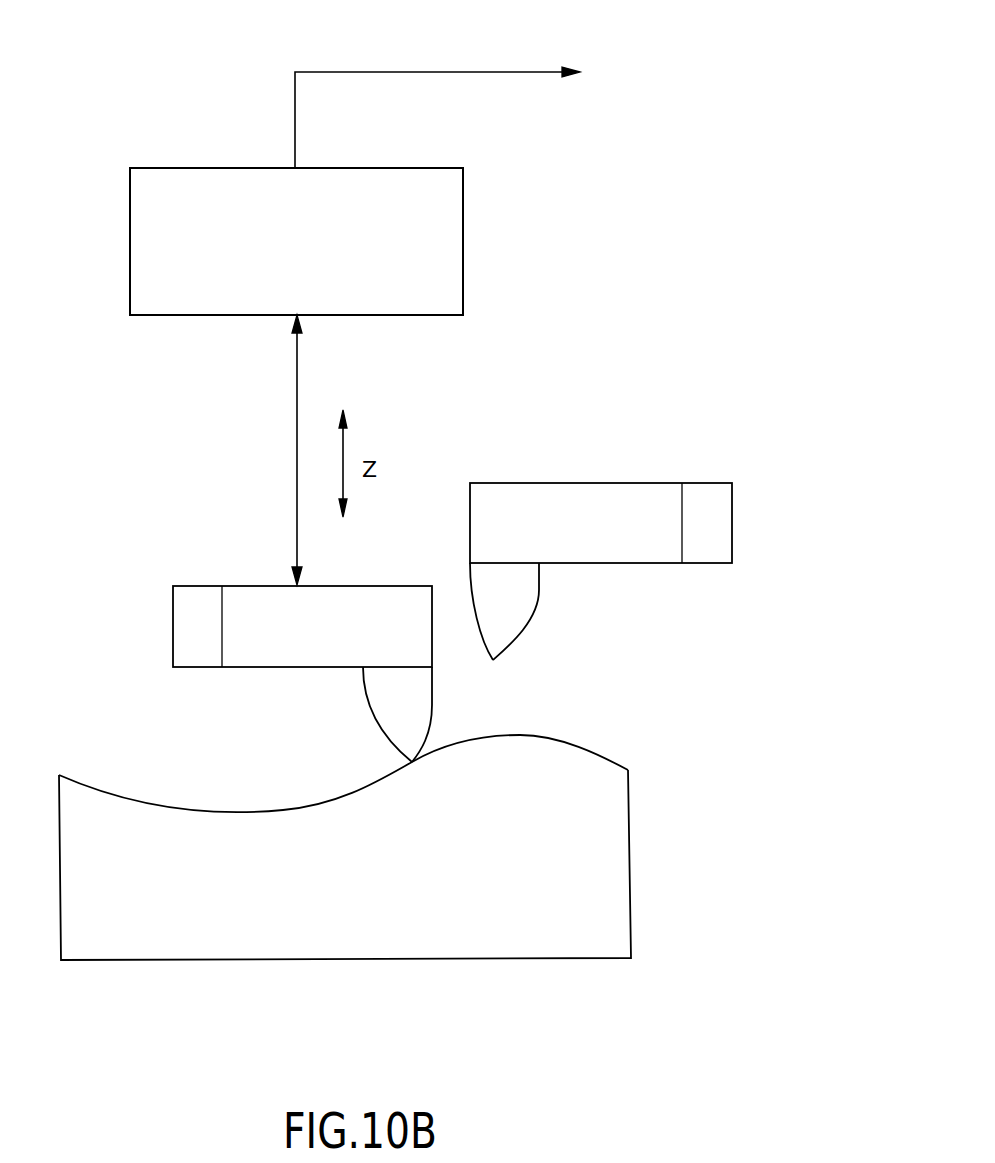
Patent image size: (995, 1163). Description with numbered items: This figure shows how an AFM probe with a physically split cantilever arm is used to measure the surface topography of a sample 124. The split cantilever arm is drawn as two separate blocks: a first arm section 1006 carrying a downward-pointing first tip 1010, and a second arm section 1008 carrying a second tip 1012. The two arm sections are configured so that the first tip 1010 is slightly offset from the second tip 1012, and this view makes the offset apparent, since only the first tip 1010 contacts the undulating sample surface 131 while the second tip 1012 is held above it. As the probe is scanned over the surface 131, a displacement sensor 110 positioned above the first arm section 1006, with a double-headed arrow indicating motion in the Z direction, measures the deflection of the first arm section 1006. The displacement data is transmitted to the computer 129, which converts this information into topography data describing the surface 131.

The cantilever displacement sensor 110 is at (463, 242).
The computer 129 is at (571, 97).
The first arm section 1006 is at (188, 586).
The second arm section 1008 is at (732, 525).
The first tip 1010 is at (377, 717).
The second tip 1012 is at (523, 630).
The sample 124 is at (345, 865).
The sample surface 131 is at (72, 775).